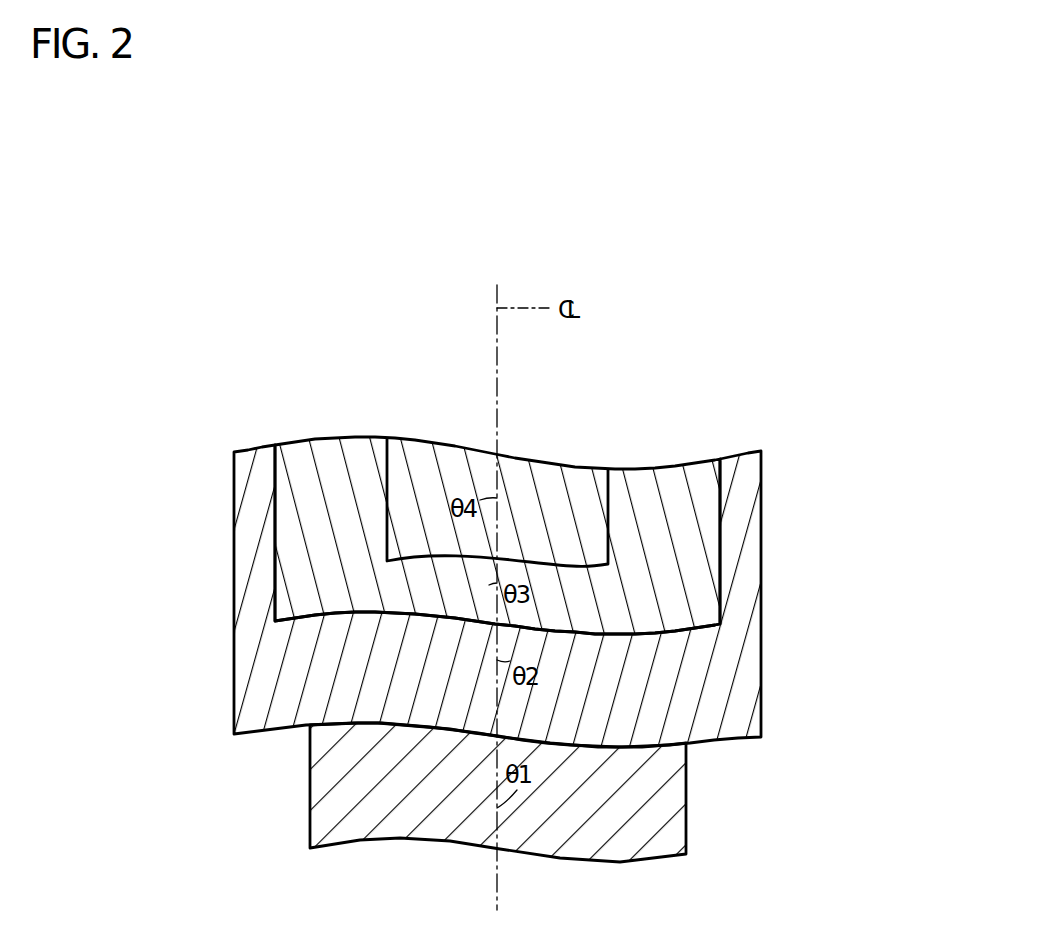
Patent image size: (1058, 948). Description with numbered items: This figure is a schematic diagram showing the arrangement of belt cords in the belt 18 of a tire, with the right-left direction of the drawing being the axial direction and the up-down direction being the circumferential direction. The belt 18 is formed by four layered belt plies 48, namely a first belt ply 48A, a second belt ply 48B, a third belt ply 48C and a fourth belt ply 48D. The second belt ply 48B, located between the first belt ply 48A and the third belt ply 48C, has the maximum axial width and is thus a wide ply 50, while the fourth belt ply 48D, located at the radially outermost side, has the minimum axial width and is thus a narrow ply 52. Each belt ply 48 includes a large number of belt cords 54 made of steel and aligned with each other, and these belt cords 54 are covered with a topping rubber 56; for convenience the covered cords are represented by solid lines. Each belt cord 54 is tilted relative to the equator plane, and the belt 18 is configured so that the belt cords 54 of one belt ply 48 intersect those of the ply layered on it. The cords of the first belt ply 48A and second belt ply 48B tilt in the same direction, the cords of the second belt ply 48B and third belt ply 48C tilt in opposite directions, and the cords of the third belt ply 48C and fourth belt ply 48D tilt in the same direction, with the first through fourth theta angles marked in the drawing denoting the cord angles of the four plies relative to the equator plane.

The belt 18 is at (742, 413).
The belt ply 48 is at (621, 470).
The first belt ply 48A is at (686, 835).
The second belt ply 48B is at (761, 718).
The third belt ply 48C is at (722, 548).
The fourth belt ply 48D is at (518, 456).
The wide ply 50 is at (497, 596).
The narrow ply 52 is at (516, 456).
The belt cord 54 is at (490, 578).
The topping rubber 56 is at (322, 455).